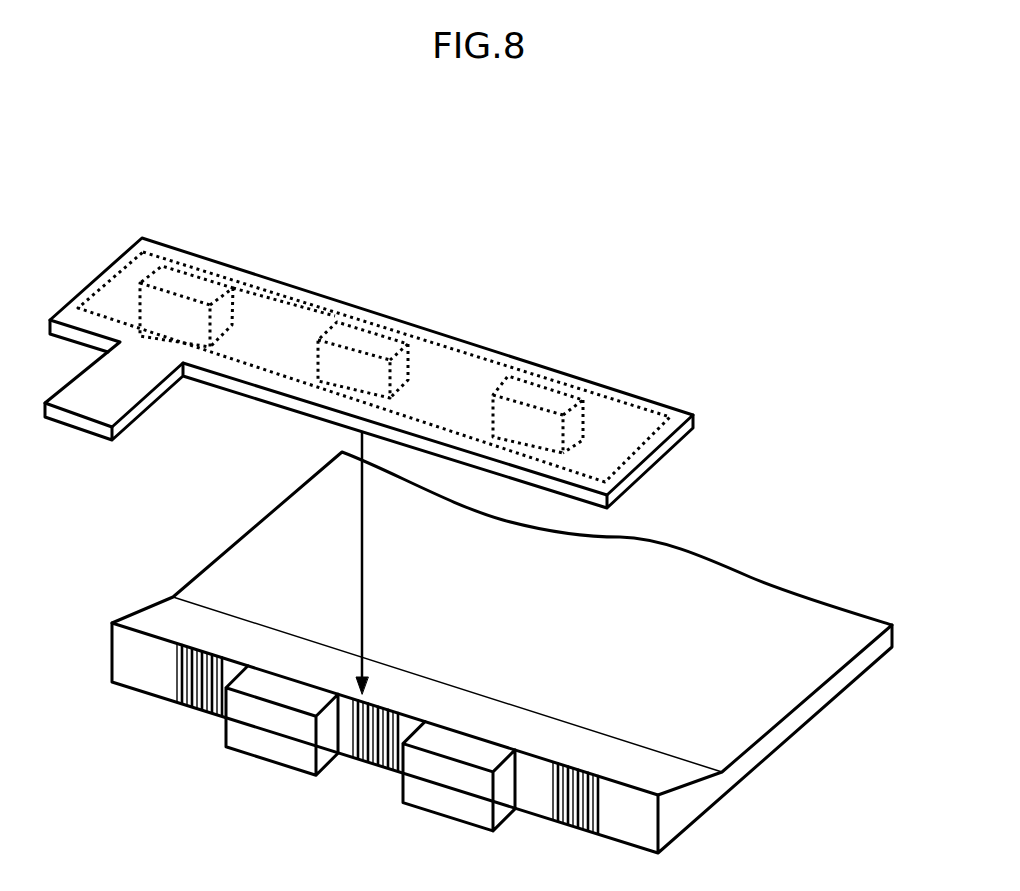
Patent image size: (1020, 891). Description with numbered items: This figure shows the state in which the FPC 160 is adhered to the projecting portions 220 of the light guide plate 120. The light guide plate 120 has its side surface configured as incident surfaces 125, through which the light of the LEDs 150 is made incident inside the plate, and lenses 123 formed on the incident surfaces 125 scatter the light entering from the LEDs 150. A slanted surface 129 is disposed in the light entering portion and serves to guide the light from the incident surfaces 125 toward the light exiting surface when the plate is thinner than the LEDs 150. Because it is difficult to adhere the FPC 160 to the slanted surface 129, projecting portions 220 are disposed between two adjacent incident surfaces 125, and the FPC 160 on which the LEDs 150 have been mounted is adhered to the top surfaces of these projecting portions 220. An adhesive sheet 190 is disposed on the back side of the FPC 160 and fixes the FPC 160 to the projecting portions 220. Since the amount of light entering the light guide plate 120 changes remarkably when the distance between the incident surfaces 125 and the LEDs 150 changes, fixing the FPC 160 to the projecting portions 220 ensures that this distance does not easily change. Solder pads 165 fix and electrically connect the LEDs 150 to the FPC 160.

The light guide plate 120 is at (240, 560).
The lenses 123 is at (552, 822).
The incident surfaces 125 is at (362, 762).
The slanted surface 129 is at (208, 628).
The LEDs 150 is at (368, 340).
The FPC 160 is at (280, 282).
The solder pads 165 is at (597, 400).
The adhesive sheet 190 is at (453, 360).
The projecting portions 220 is at (262, 737).